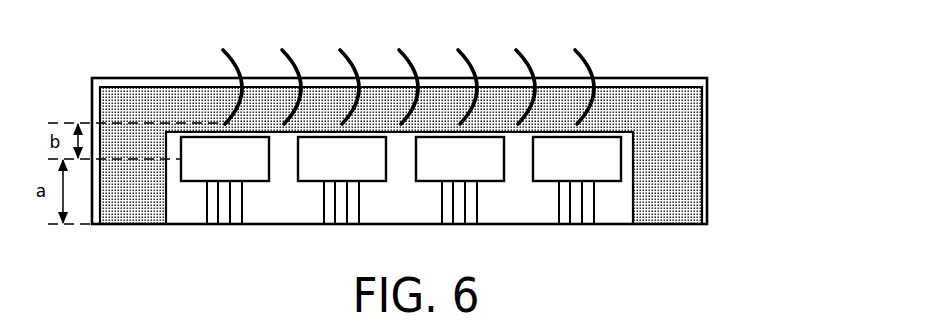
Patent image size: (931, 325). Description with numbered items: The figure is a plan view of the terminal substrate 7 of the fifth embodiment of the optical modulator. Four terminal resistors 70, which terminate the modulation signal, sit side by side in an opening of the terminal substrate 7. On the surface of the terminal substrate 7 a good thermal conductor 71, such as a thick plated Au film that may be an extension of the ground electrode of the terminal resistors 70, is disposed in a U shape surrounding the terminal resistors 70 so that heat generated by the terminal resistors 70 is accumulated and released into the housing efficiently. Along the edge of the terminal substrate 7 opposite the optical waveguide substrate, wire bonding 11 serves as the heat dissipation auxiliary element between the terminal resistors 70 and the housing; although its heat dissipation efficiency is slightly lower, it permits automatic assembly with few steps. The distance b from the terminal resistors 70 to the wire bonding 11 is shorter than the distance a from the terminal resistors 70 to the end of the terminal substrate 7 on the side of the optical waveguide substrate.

The terminal substrate 7 is at (716, 166).
The good thermal conductor 71 is at (672, 125).
The terminal resistors 70 is at (603, 165).
The wire bonding 11 is at (587, 52).